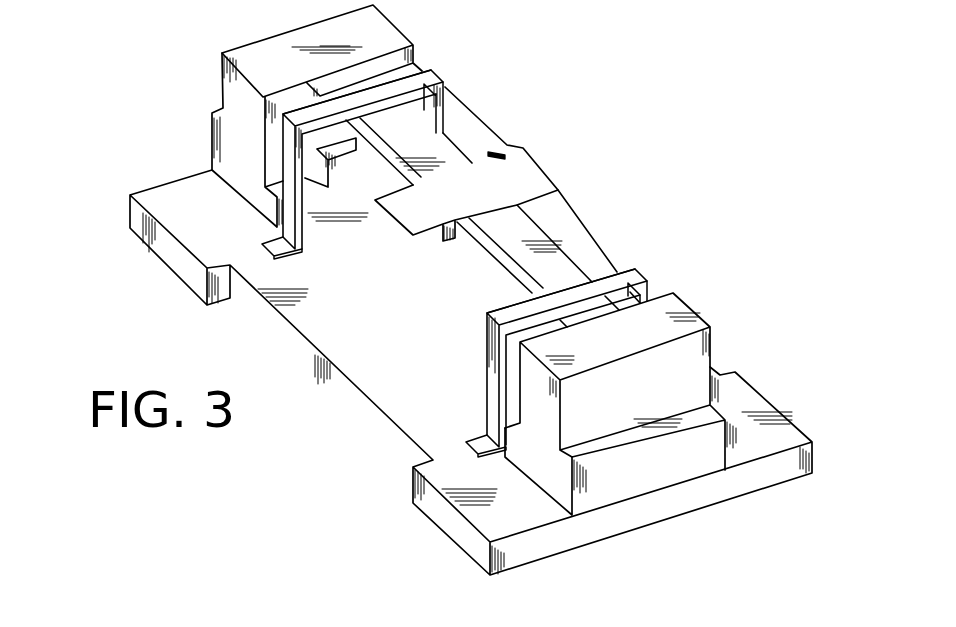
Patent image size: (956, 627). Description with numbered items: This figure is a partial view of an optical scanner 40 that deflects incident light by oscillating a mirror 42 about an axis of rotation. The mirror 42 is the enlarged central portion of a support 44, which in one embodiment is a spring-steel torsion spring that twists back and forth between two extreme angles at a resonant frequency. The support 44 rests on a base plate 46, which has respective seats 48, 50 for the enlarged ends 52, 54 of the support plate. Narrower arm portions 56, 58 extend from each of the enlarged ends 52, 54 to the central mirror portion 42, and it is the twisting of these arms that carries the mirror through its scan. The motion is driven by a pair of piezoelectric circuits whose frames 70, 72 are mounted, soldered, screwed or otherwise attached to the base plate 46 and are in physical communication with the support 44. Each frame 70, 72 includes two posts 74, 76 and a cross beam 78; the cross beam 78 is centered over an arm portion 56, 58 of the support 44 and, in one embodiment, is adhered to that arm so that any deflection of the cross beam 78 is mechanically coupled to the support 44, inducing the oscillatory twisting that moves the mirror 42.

The optical scanner 40 is at (697, 152).
The mirror 42 is at (534, 176).
The support 44 is at (557, 263).
The base plate 46 is at (340, 400).
The seat 48 is at (535, 463).
The seat 50 is at (212, 118).
The support end 52 is at (634, 347).
The support end 54 is at (374, 38).
The arm portion 56 is at (518, 240).
The arm portion 58 is at (408, 135).
The frame 70 is at (653, 264).
The frame 72 is at (452, 72).
The post 74 is at (306, 238).
The post 76 is at (447, 112).
The cross beam 78 is at (366, 90).